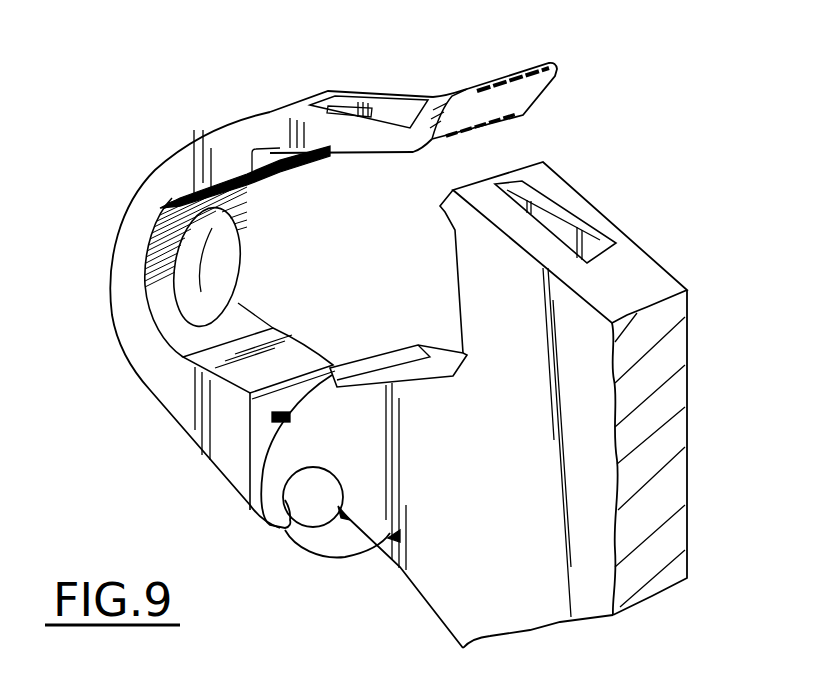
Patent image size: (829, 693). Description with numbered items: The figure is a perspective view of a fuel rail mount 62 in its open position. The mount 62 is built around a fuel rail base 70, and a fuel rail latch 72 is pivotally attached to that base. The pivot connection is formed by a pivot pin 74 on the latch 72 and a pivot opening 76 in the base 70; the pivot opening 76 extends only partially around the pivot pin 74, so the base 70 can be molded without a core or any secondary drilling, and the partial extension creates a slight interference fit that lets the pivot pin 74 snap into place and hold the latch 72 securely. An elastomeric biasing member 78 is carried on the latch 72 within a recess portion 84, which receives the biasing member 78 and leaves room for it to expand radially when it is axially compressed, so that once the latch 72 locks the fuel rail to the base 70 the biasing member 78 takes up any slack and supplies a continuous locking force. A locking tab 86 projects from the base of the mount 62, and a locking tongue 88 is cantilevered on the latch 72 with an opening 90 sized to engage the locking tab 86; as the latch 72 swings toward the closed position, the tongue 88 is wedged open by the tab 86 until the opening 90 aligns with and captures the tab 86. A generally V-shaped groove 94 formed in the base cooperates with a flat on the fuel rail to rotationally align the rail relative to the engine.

The fuel rail mount 62 is at (472, 597).
The fuel rail base 70 is at (672, 553).
The fuel rail latch 72 is at (223, 148).
The pivot pin 74 is at (317, 515).
The pivot opening 76 is at (287, 500).
The biasing member 78 is at (237, 253).
The recess portion 84 is at (177, 337).
The locking tab 86 is at (553, 210).
The locking tongue 88 is at (293, 110).
The opening 90 is at (342, 105).
The V-shaped groove 94 is at (432, 360).